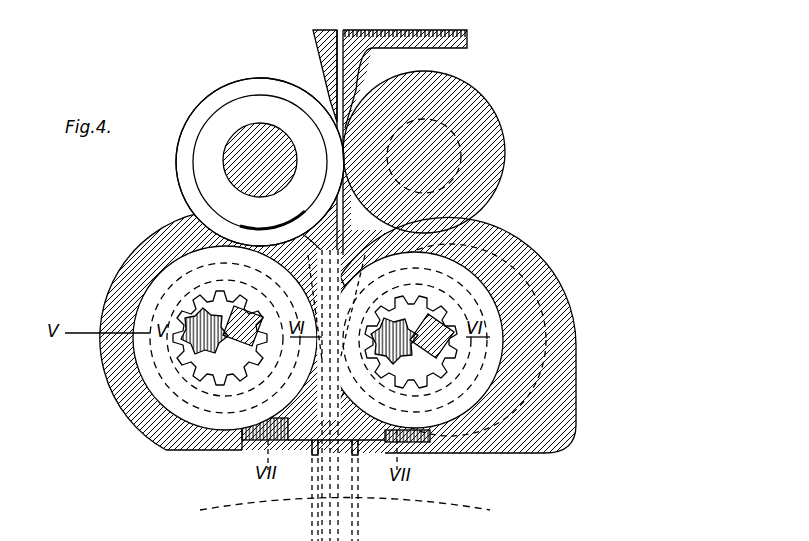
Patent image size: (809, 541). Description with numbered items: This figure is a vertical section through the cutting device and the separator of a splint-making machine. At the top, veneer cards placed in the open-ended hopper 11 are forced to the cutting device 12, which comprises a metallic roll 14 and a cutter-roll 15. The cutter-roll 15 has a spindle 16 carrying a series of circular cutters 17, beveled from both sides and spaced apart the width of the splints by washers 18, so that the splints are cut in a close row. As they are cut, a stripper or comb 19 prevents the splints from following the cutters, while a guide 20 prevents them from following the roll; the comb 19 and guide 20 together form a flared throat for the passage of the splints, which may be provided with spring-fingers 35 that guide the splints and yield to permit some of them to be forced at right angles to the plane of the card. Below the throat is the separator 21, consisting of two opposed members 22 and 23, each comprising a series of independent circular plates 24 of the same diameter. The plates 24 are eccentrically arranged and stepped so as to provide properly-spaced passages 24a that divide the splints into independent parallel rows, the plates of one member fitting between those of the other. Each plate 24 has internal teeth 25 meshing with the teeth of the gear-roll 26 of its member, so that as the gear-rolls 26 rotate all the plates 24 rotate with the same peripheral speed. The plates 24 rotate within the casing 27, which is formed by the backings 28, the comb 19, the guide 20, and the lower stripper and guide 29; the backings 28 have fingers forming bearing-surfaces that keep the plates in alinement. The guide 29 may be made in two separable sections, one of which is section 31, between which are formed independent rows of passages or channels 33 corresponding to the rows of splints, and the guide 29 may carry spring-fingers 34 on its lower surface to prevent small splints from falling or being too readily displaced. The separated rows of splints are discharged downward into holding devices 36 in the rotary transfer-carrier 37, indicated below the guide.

The hopper 11 is at (443, 58).
The cutting device 12 is at (252, 161).
The metallic roll 14 is at (506, 152).
The cutter-roll 15 is at (148, 162).
The spindle 16 is at (230, 142).
The circular cutters 17 is at (208, 90).
The washers 18 is at (256, 100).
The stripper or comb 19 is at (288, 234).
The guide 20 is at (400, 256).
The separator 21 is at (471, 335).
The separator member 22 is at (476, 470).
The separator member 23 is at (146, 464).
The circular plates 24 is at (178, 392).
The passages 24a is at (322, 345).
The internal teeth 25 is at (215, 312).
The gear-roll 26 is at (258, 325).
The casing 27 is at (222, 330).
The backings 28 is at (568, 407).
The stripper and guide 29 is at (372, 443).
The separable section 31 is at (282, 440).
The passages or channels 33 is at (318, 448).
The spring-fingers 34 is at (343, 445).
The spring-fingers 35 is at (323, 335).
The holding devices 36 is at (310, 498).
The transfer-carrier 37 is at (318, 444).